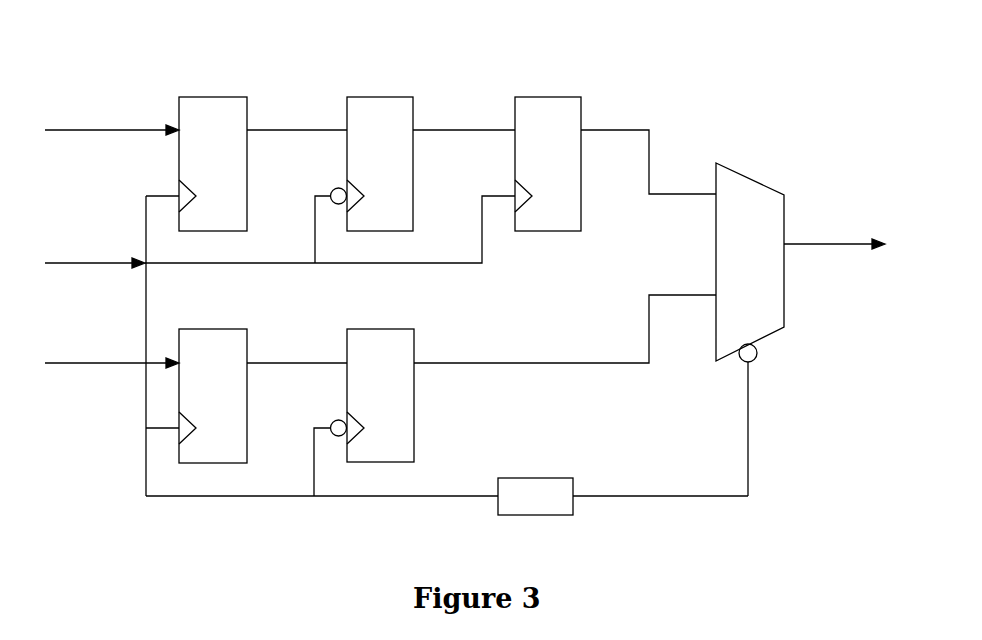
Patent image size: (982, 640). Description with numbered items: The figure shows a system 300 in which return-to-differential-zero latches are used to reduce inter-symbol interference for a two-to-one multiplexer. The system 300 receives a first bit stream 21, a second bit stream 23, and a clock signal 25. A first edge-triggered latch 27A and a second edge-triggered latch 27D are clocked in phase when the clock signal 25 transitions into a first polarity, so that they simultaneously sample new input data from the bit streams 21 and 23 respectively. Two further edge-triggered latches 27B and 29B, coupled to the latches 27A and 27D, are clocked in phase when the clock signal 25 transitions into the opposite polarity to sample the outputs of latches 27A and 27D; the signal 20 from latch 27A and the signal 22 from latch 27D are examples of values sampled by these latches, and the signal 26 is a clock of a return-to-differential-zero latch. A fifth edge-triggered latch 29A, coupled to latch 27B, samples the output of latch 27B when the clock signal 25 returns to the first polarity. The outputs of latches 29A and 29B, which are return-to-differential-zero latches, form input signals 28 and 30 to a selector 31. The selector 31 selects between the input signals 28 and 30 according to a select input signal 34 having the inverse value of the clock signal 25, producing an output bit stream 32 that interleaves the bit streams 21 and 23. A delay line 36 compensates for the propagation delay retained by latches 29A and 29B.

The system 300 is at (465, 262).
The first edge-triggered latch 27A is at (213, 164).
The edge-triggered latch 27B is at (372, 164).
The fifth edge-triggered latch 29A is at (548, 164).
The second edge-triggered latch 27D is at (213, 396).
The edge-triggered latch 29B is at (373, 395).
The selector 31 is at (750, 262).
The select input signal 34 is at (769, 420).
The delay line 36 is at (447, 496).
The first bit stream 21 is at (112, 118).
The clock signal 25 is at (280, 346).
The second bit stream 23 is at (112, 354).
The signal 20 is at (464, 114).
The input signal 28 is at (648, 163).
The signal 22 is at (297, 353).
The input signal 30 is at (565, 313).
The output bit stream 32 is at (834, 229).
The signal 26 is at (328, 462).